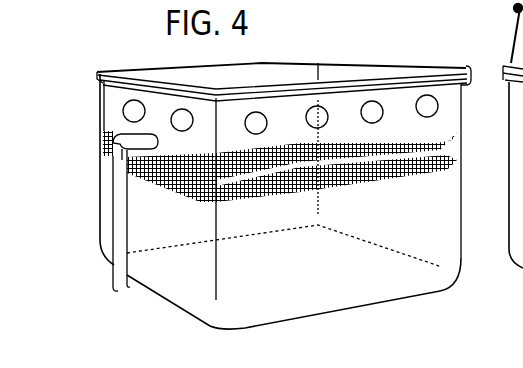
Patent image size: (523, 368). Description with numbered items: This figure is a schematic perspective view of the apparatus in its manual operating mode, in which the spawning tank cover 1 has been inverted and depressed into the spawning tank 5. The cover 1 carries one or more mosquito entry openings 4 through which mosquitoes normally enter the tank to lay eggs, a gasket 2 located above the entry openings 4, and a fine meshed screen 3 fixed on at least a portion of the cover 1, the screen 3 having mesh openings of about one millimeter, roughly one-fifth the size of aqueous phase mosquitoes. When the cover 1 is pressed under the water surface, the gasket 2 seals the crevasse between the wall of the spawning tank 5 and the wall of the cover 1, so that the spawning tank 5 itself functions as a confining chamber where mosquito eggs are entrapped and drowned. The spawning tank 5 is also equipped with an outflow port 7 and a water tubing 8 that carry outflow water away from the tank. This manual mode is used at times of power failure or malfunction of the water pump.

The spawning tank cover 1 is at (433, 122).
The gasket 2 is at (445, 143).
The fine meshed screen 3 is at (442, 168).
The mosquito entry openings 4 is at (133, 110).
The spawning tank 5 is at (322, 301).
The outflow port 7 is at (157, 145).
The water tubing 8 is at (120, 197).